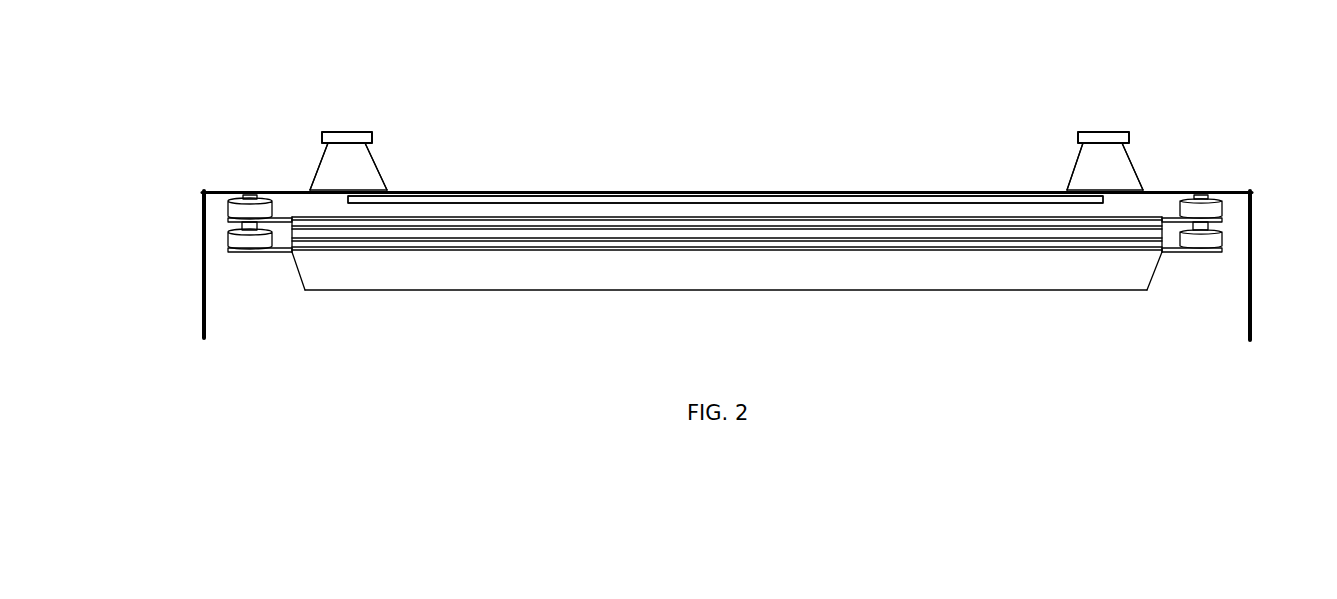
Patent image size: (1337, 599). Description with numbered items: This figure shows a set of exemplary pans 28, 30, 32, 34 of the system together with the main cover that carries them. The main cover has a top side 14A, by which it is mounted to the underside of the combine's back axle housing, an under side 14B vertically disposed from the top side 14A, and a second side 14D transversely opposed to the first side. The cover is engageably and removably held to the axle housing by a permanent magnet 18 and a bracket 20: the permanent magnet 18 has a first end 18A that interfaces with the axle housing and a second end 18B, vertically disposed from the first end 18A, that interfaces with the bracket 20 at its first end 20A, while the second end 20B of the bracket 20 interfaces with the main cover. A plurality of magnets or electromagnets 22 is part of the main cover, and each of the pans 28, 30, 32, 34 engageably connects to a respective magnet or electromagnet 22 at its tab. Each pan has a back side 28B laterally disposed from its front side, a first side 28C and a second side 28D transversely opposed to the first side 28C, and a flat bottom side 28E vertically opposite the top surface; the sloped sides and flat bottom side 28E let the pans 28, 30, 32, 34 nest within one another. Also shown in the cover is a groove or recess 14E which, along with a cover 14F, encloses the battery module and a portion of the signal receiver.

The top side 14A is at (200, 202).
The under side 14B is at (1112, 195).
The second side 14D is at (1252, 298).
The groove or recess 14E is at (686, 198).
The cover 14F is at (725, 199).
The permanent magnet 18 is at (325, 132).
The first end 18A is at (357, 130).
The second end 18B is at (725, 137).
The bracket 20 is at (325, 170).
The first end 20A is at (373, 140).
The second end 20B is at (387, 190).
The magnets or electromagnets 22 is at (232, 238).
The pan 28 is at (719, 245).
The back side 28B is at (1037, 273).
The first side 28C is at (1150, 285).
The second side 28D is at (290, 258).
The bottom side 28E is at (840, 290).
The pan 30 is at (606, 245).
The pan 32 is at (884, 232).
The pan 34 is at (750, 223).